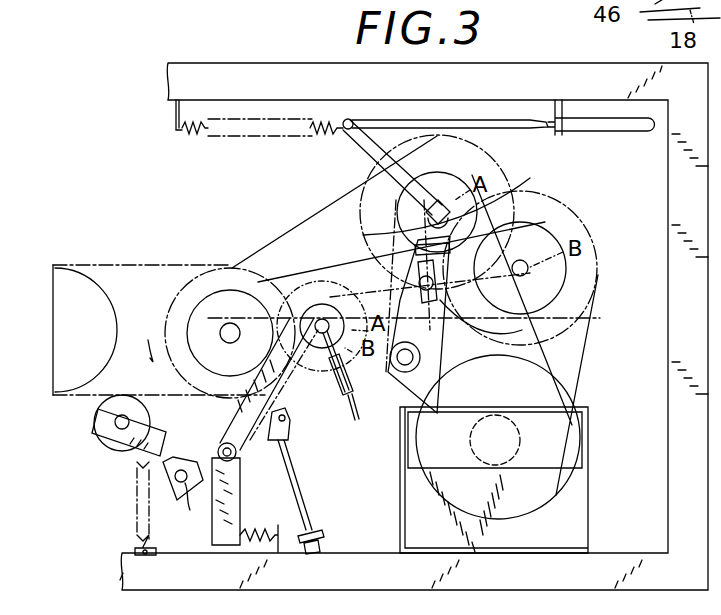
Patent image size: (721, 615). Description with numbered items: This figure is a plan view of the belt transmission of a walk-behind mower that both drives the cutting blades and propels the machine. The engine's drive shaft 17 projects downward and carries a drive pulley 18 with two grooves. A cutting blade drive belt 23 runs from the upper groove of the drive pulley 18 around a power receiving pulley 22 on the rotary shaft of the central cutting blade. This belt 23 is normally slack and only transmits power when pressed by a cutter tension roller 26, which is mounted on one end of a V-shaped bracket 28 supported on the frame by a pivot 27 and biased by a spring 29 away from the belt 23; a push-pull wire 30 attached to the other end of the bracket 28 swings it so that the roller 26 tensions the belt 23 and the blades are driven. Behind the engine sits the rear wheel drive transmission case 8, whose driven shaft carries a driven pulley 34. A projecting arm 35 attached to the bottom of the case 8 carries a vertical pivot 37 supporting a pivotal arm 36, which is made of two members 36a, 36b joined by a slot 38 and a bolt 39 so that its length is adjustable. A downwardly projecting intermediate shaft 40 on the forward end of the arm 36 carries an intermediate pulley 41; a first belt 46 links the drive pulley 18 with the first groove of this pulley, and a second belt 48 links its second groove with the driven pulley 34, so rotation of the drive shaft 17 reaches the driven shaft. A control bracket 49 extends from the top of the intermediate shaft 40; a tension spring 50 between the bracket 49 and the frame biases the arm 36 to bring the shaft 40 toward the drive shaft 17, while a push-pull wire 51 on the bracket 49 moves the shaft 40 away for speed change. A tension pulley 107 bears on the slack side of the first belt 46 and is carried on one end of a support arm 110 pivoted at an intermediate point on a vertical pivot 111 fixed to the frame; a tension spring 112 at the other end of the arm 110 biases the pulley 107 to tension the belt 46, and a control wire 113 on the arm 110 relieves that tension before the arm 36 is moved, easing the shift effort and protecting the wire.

The rear wheel drive transmission case 8 is at (578, 462).
The drive shaft 17 is at (230, 333).
The drive pulley 18 is at (285, 313).
The power receiving pulley 22 is at (104, 330).
The cutting blade drive belt 23 is at (160, 267).
The cutter tension roller 26 is at (120, 450).
The pivot 27 is at (188, 509).
The V-shaped bracket 28 is at (192, 472).
The spring 29 is at (134, 540).
The push-pull wire 30 is at (304, 496).
The driven pulley 34 is at (553, 500).
The projecting arm 35 is at (498, 437).
The pivotal arm 36 is at (420, 350).
The member of pivotal arm 36a is at (424, 216).
The member of pivotal arm 36b is at (481, 319).
The vertical pivot 37 is at (400, 378).
The slot 38 is at (438, 276).
The bolt 39 is at (418, 284).
The intermediate shaft 40 is at (438, 200).
The intermediate pulley 41 is at (546, 195).
The first belt 46 is at (310, 250).
The second belt 48 is at (588, 366).
The control bracket 49 is at (372, 150).
The tension spring 50 is at (259, 139).
The push-pull wire 51 is at (525, 118).
The tension pulley 107 is at (324, 360).
The support arm 110 is at (284, 410).
The vertical pivot 111 is at (236, 456).
The tension spring 112 is at (248, 505).
The control wire 113 is at (357, 422).